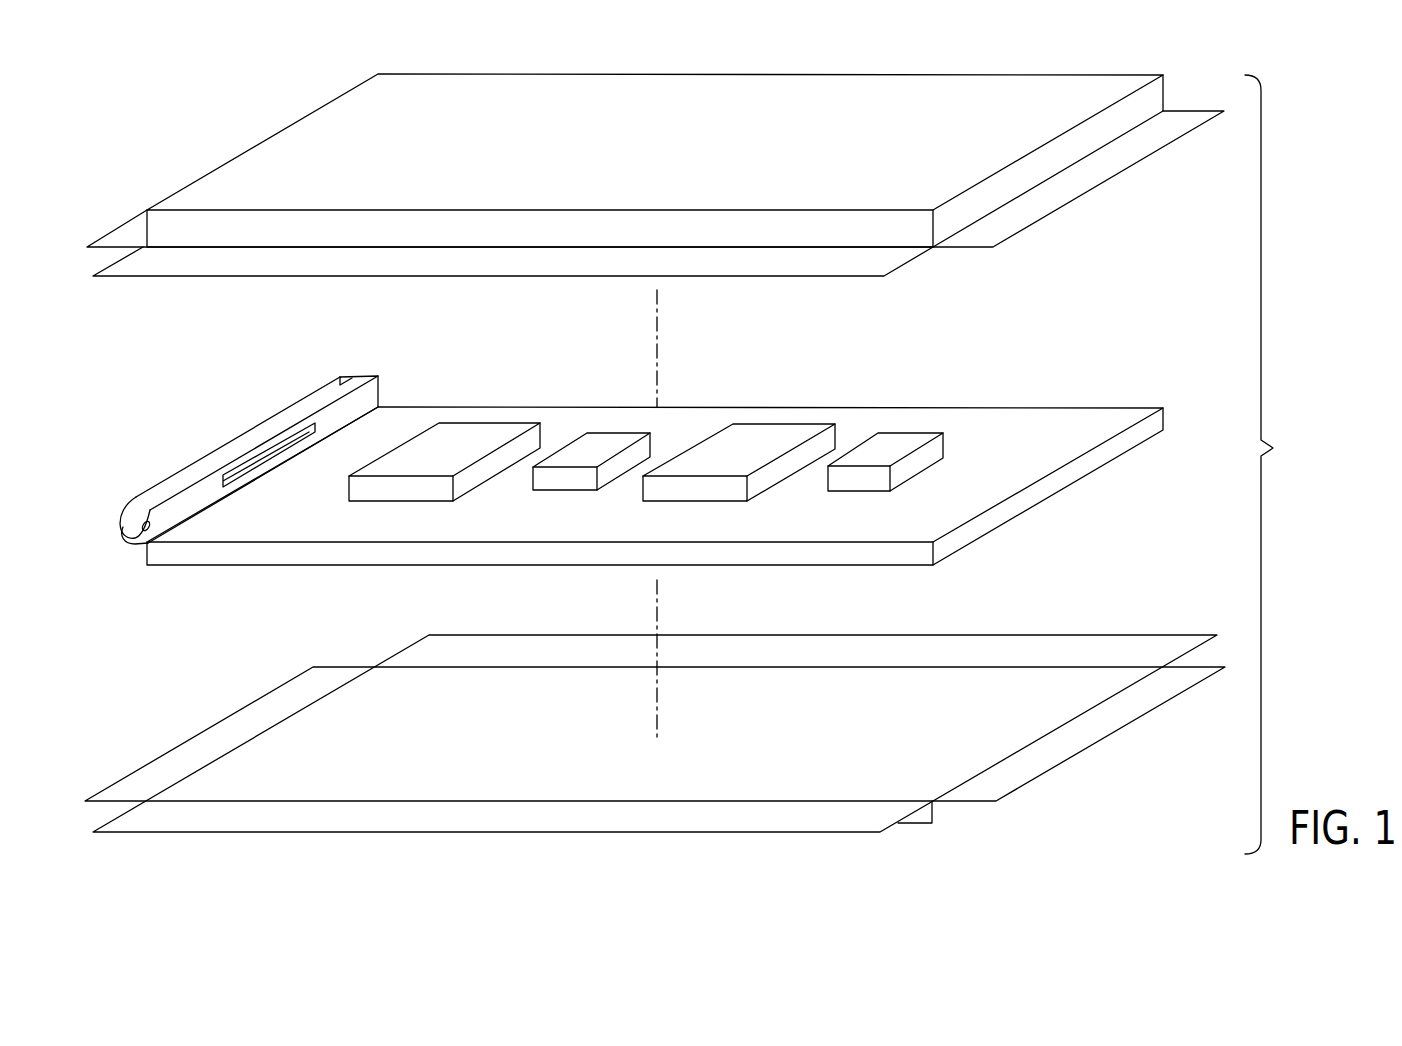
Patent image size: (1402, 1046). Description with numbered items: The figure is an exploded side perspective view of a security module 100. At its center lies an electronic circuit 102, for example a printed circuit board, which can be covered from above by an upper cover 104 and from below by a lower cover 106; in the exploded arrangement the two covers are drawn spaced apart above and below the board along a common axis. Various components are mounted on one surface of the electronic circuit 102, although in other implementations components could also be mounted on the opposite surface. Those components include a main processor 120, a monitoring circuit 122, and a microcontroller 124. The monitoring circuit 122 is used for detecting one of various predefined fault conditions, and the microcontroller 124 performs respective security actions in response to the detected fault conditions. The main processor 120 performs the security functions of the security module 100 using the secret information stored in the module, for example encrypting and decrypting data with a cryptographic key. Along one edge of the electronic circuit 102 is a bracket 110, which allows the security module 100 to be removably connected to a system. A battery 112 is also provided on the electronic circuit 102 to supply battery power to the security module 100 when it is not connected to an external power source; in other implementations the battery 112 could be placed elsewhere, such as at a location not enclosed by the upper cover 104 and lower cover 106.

The security module 100 is at (1280, 464).
The electronic circuit 102 is at (1070, 472).
The upper cover 104 is at (657, 133).
The lower cover 106 is at (770, 687).
The bracket 110 is at (250, 445).
The battery 112 is at (888, 445).
The main processor 120 is at (475, 445).
The monitoring circuit 122 is at (607, 445).
The microcontroller 124 is at (752, 445).